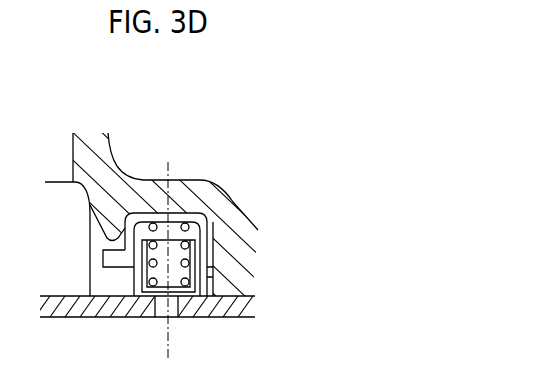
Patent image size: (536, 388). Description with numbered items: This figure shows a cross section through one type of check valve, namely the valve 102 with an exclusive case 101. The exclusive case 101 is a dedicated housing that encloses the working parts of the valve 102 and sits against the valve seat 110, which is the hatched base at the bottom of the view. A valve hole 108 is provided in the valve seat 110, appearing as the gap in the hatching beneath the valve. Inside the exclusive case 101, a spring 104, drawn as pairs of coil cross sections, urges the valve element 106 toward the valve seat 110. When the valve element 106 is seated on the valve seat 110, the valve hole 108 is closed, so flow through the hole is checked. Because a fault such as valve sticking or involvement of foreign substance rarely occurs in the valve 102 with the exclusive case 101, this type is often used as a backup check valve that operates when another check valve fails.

The exclusive case 101 is at (238, 202).
The valve with exclusive case 102 is at (243, 170).
The spring 104 is at (193, 255).
The valve element 106 is at (195, 287).
The valve hole 108 is at (178, 307).
The valve seat 110 is at (140, 307).